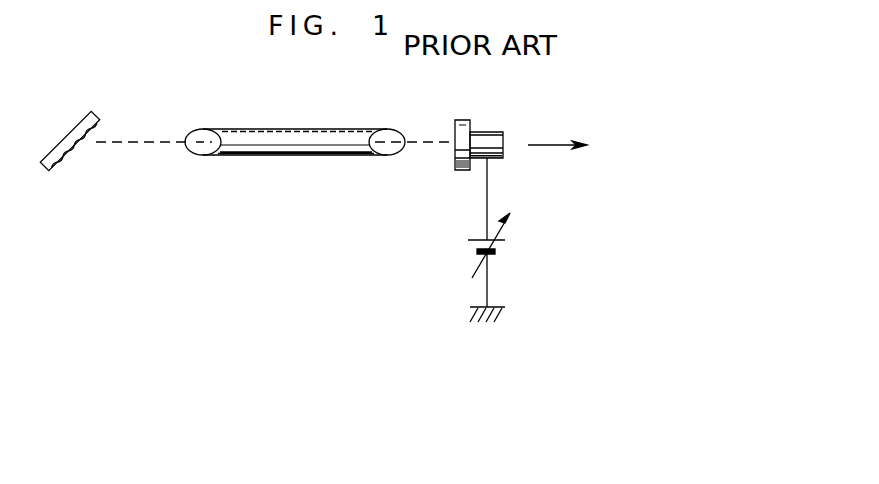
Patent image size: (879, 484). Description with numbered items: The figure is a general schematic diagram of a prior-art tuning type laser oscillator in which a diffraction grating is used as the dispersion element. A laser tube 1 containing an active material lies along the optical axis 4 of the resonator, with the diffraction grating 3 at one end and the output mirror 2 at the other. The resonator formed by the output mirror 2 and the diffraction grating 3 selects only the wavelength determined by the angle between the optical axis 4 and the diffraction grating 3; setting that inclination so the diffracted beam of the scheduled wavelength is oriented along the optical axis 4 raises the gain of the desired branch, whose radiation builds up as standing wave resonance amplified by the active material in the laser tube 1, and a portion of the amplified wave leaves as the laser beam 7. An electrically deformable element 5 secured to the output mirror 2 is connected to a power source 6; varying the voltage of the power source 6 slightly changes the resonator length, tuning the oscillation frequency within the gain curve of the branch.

The laser tube 1 is at (325, 132).
The output mirror 2 is at (463, 120).
The diffraction grating 3 is at (80, 117).
The optical axis of the resonator 4 is at (163, 141).
The electrically deformable element 5 is at (494, 132).
The power source 6 is at (503, 252).
The laser beam 7 is at (565, 145).